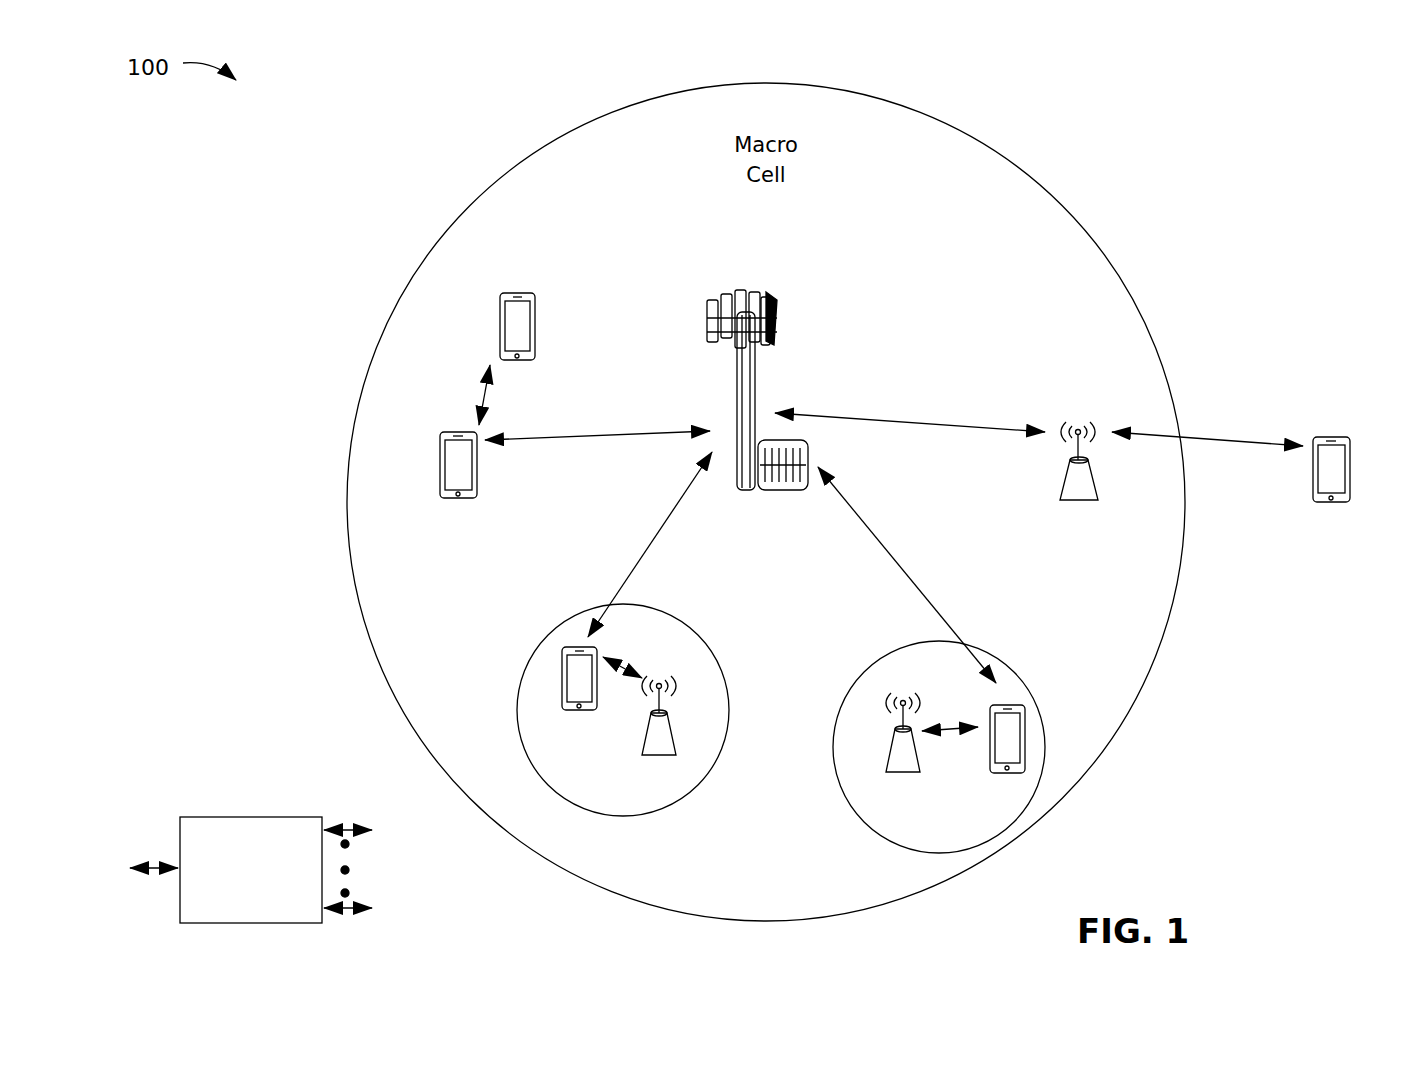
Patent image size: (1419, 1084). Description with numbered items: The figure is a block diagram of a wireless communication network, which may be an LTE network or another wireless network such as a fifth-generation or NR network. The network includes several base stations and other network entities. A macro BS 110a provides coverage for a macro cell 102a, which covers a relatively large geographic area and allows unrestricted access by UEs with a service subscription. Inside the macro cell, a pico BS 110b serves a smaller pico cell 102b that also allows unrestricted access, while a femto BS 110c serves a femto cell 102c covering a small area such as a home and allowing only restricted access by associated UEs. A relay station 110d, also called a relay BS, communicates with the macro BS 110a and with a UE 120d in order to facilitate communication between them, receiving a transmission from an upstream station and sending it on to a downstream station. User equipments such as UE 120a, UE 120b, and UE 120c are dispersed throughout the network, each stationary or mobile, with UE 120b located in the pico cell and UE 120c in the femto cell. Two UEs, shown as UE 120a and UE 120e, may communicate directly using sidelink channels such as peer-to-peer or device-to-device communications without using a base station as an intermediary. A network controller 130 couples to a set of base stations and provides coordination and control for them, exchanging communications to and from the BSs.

The macro cell 102a is at (1046, 189).
The pico cell 102b is at (716, 651).
The femto cell 102c is at (874, 661).
The macro BS 110a is at (752, 285).
The pico BS 110b is at (682, 743).
The femto BS 110c is at (889, 763).
The relay station 110d is at (1077, 424).
The UE 120a is at (440, 460).
The UE 120b is at (565, 712).
The UE 120c is at (990, 776).
The UE 120d is at (1340, 437).
The UE 120e is at (500, 310).
The network controller 130 is at (248, 817).